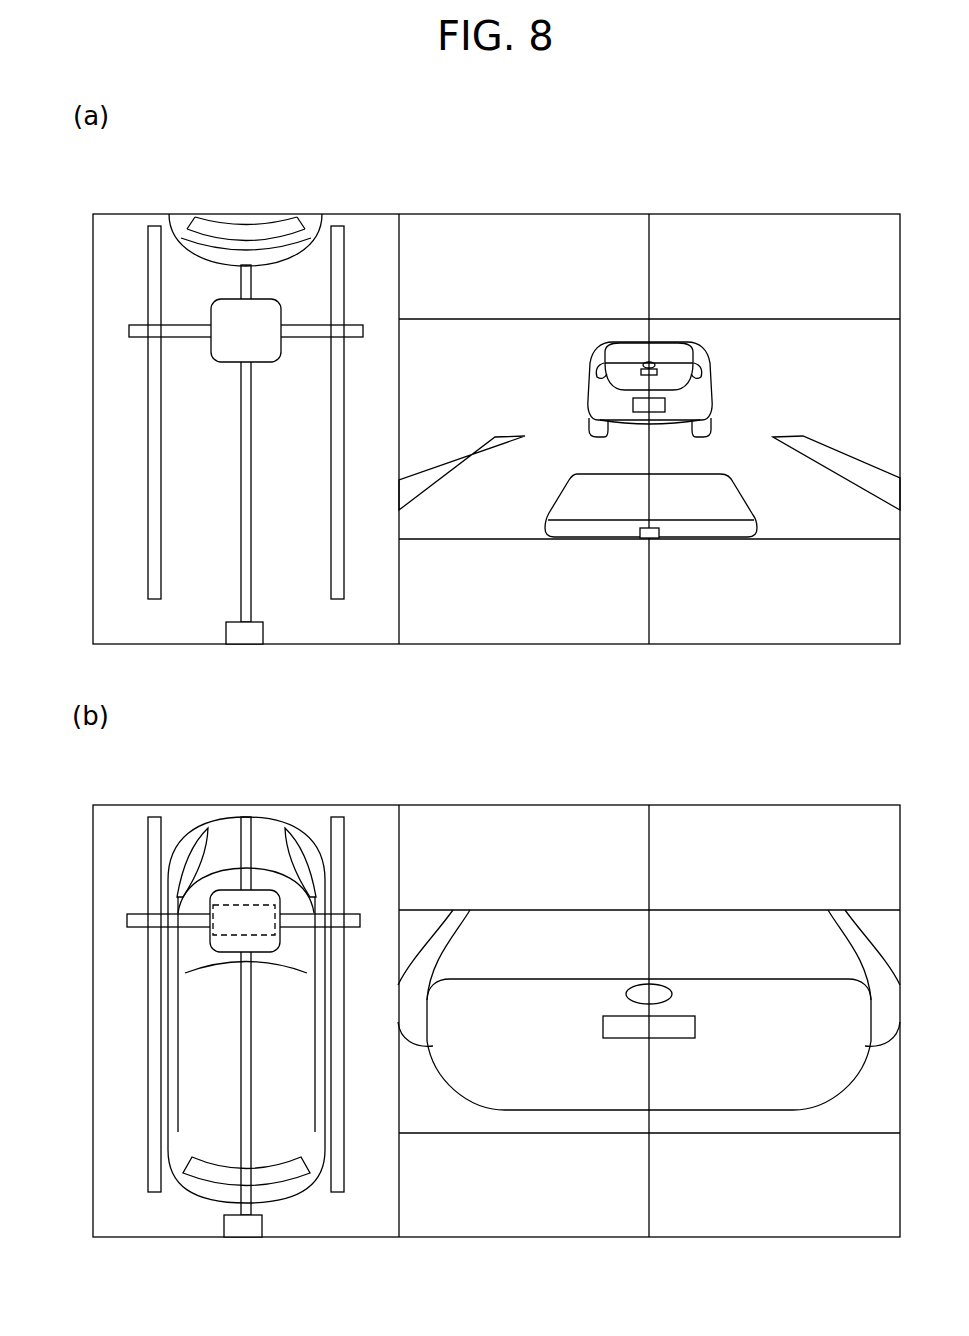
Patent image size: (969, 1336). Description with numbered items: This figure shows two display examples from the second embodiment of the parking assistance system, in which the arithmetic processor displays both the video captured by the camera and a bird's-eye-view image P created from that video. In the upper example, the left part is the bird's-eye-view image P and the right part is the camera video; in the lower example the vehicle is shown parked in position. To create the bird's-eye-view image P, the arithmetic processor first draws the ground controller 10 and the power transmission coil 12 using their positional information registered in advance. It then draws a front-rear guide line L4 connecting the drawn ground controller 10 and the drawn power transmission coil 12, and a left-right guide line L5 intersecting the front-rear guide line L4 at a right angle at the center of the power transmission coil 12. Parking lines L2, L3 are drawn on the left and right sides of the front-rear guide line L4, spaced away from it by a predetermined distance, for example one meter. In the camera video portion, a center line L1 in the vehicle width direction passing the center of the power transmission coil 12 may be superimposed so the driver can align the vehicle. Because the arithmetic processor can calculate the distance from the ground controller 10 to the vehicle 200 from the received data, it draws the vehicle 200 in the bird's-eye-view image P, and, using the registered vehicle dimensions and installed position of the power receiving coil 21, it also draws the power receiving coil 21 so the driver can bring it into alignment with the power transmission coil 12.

The vehicle 200 is at (226, 228).
The bird's-eye-view image P is at (100, 270).
The ground controller 10 is at (260, 622).
The power transmission coil 12 is at (218, 362).
The power receiving coil 21 is at (260, 932).
The center line L1 is at (650, 577).
The parking line L2 is at (156, 507).
The parking line L3 is at (333, 495).
The front-rear guide line L4 is at (247, 432).
The left-right guide line L5 is at (308, 337).